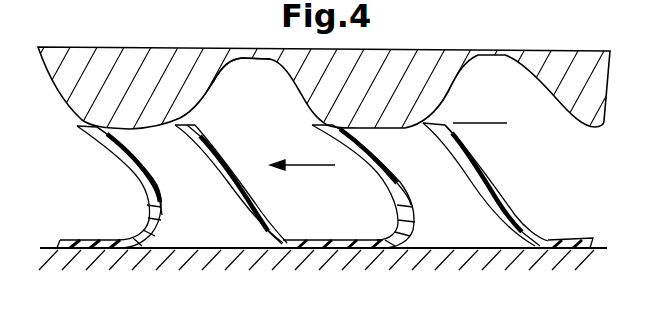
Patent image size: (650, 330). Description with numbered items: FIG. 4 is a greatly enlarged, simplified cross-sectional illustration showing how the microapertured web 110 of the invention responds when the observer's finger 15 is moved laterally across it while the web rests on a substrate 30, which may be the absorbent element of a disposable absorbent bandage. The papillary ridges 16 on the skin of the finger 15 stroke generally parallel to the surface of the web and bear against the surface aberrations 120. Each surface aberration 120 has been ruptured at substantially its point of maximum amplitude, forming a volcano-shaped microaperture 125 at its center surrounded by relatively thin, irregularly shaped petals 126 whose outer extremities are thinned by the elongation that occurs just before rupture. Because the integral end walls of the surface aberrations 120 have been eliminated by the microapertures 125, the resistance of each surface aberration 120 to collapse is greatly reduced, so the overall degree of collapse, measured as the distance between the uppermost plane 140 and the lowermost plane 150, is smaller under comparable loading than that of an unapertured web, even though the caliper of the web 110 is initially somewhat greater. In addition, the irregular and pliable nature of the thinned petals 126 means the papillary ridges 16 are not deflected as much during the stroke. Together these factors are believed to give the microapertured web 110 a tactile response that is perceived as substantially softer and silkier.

The papillary ridges 16 is at (134, 91).
The observer's finger 15 is at (258, 72).
The petals 126 is at (77, 125).
The uppermost plane 140 is at (496, 122).
The microapertured web 110 is at (302, 172).
The surface aberrations 120 is at (143, 188).
The microaperture 125 is at (210, 196).
The lowermost plane 150 is at (236, 247).
The substrate 30 is at (232, 262).